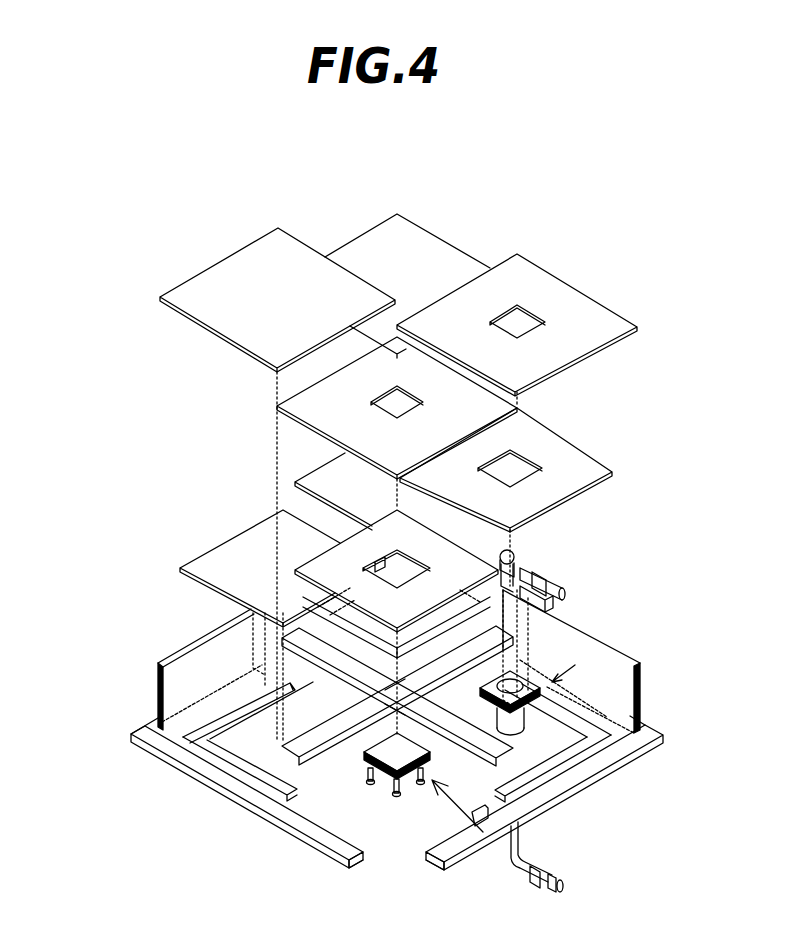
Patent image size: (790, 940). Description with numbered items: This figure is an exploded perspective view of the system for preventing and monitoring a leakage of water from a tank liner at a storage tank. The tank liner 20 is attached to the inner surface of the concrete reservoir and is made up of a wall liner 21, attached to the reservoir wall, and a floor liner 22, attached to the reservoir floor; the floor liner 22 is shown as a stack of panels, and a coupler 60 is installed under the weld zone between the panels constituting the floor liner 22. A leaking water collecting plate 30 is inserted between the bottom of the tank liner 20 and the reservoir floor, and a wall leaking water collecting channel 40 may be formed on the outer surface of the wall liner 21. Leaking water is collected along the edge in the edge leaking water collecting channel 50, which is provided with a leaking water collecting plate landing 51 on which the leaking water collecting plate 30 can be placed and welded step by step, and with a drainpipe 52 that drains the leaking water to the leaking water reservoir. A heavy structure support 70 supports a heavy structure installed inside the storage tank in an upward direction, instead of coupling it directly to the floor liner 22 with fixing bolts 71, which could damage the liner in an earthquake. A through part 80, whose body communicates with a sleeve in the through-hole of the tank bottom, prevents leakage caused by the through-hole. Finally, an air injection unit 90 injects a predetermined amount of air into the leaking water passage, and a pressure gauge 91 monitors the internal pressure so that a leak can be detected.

The tank liner 20 is at (94, 562).
The wall liner 21 is at (160, 656).
The floor liner 22 is at (287, 257).
The leaking water collecting plate 30 is at (462, 505).
The wall leaking water collecting channel 40 is at (252, 640).
The edge leaking water collecting channel 50 is at (345, 866).
The leaking water collecting plate landing 51 is at (437, 824).
The drainpipe 52 is at (568, 880).
The coupler 60 is at (324, 672).
The heavy structure support 70 is at (482, 850).
The fixing bolts 71 is at (385, 792).
The through part 80 is at (588, 642).
The air injection unit 90 is at (574, 565).
The pressure gauge 91 is at (515, 556).